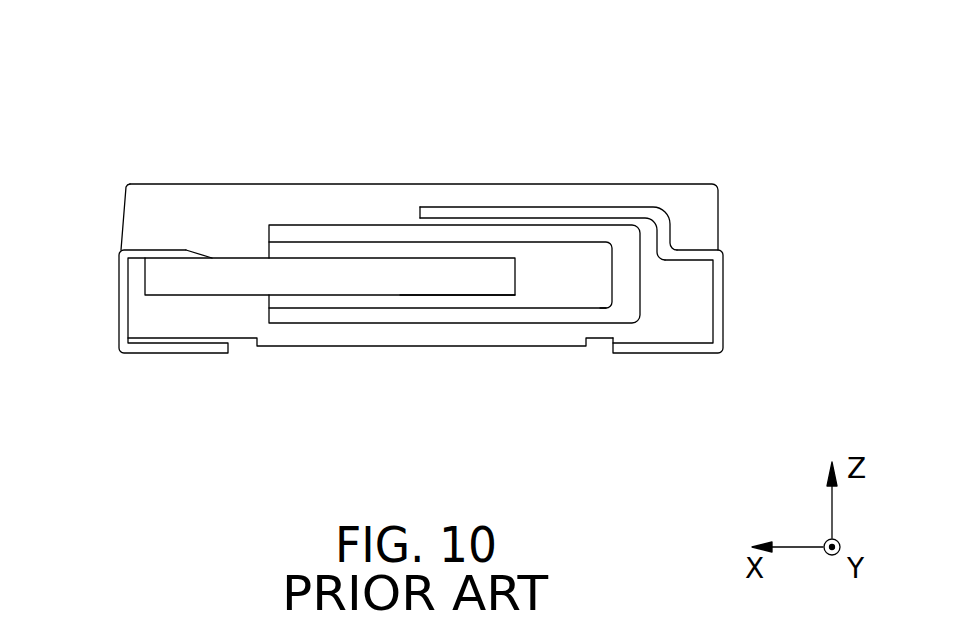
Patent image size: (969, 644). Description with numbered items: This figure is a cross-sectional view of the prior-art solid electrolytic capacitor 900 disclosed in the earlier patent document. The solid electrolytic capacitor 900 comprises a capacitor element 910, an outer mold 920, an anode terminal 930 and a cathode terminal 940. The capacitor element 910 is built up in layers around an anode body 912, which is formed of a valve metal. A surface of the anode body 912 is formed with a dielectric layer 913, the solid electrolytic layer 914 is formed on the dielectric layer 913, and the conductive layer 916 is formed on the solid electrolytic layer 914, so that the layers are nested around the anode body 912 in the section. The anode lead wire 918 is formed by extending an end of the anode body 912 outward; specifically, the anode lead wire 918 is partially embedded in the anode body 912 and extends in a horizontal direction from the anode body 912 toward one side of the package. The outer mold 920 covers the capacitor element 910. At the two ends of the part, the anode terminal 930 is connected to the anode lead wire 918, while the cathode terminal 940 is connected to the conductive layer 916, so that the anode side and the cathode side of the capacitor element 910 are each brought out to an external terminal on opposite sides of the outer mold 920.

The solid electrolytic capacitor 900 is at (813, 57).
The capacitor element 910 is at (355, 220).
The anode body 912 is at (395, 278).
The dielectric layer 913 is at (462, 296).
The solid electrolytic layer 914 is at (310, 302).
The conductive layer 916 is at (545, 234).
The anode lead wire 918 is at (228, 278).
The outer mold 920 is at (677, 198).
The anode terminal 930 is at (121, 297).
The cathode terminal 940 is at (722, 300).